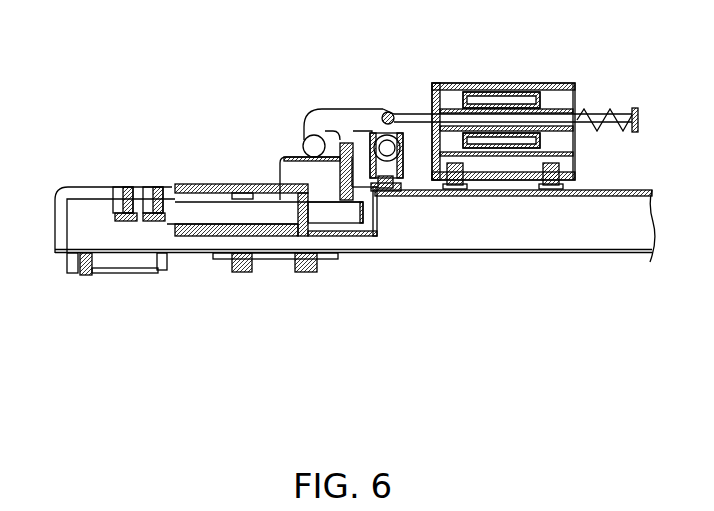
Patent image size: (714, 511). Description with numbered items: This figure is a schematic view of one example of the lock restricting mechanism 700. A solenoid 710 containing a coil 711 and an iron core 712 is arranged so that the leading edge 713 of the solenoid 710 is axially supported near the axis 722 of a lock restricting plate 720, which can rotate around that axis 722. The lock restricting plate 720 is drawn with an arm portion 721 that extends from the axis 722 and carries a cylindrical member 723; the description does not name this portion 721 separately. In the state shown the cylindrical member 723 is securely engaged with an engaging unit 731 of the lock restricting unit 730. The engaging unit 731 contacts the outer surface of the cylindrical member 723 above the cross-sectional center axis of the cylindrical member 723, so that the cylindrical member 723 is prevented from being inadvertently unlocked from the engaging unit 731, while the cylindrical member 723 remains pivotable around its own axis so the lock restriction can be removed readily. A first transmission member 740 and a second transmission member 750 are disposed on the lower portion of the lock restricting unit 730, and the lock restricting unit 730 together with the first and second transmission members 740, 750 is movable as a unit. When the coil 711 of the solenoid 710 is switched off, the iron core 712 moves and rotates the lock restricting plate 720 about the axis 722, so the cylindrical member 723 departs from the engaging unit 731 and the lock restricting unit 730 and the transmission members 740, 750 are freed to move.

The lock restricting mechanism 700 is at (474, 59).
The solenoid 710 is at (560, 83).
The coil 711 is at (509, 100).
The iron core 712 is at (396, 113).
The leading edge 713 is at (400, 138).
The lock restricting plate 720 is at (335, 107).
The lever arm 721 is at (349, 108).
The axis 722 is at (397, 186).
The cylindrical member 723 is at (304, 137).
The lock restricting unit 730 is at (268, 172).
The engaging unit 731 is at (343, 142).
The first transmission member 740 is at (203, 218).
The second transmission member 750 is at (58, 234).